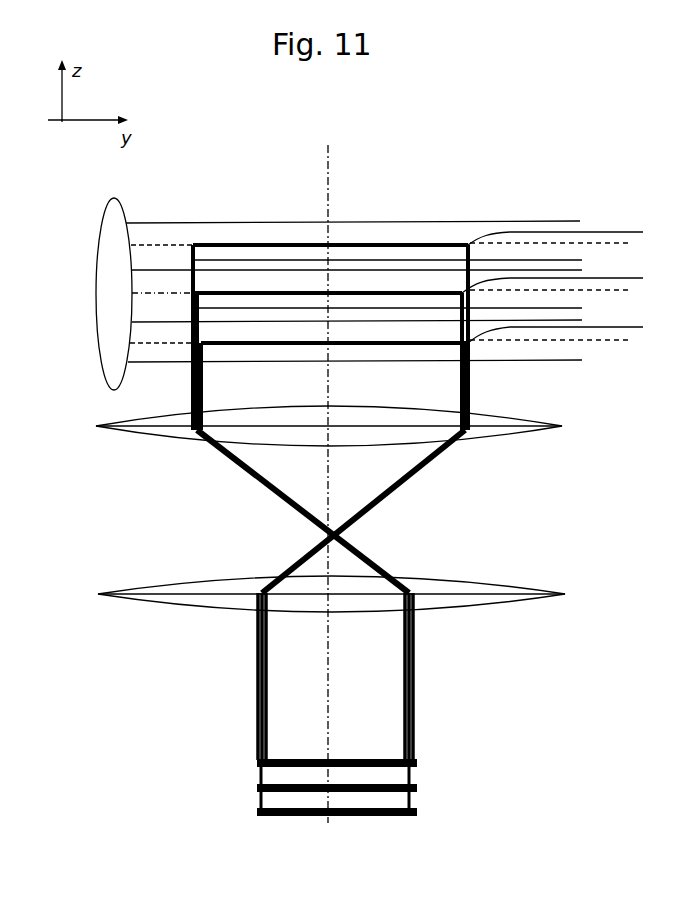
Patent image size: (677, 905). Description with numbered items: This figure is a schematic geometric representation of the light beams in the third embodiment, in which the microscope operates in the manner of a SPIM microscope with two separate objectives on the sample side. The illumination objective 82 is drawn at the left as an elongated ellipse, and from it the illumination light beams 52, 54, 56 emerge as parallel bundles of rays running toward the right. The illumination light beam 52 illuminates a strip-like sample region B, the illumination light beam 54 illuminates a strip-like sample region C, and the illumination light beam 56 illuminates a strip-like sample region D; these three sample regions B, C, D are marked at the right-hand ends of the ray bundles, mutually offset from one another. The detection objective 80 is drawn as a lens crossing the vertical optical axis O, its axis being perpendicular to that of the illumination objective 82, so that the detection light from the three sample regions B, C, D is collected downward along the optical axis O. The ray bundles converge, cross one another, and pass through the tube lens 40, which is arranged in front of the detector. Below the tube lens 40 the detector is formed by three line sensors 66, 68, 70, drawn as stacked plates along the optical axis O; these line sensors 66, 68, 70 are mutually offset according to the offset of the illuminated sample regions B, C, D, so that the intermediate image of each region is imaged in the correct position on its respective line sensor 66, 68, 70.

The objective 82 is at (115, 196).
The illumination light beam 52 is at (193, 223).
The illumination light beam 54 is at (582, 271).
The illumination light beam 56 is at (191, 363).
The objective 80 is at (562, 427).
The tube lens 40 is at (543, 580).
The line sensor 66 is at (418, 760).
The line sensor 68 is at (418, 786).
The line sensor 70 is at (418, 810).
The optical axis O is at (333, 186).
The sample region B is at (565, 234).
The sample region C is at (562, 281).
The sample region D is at (565, 330).